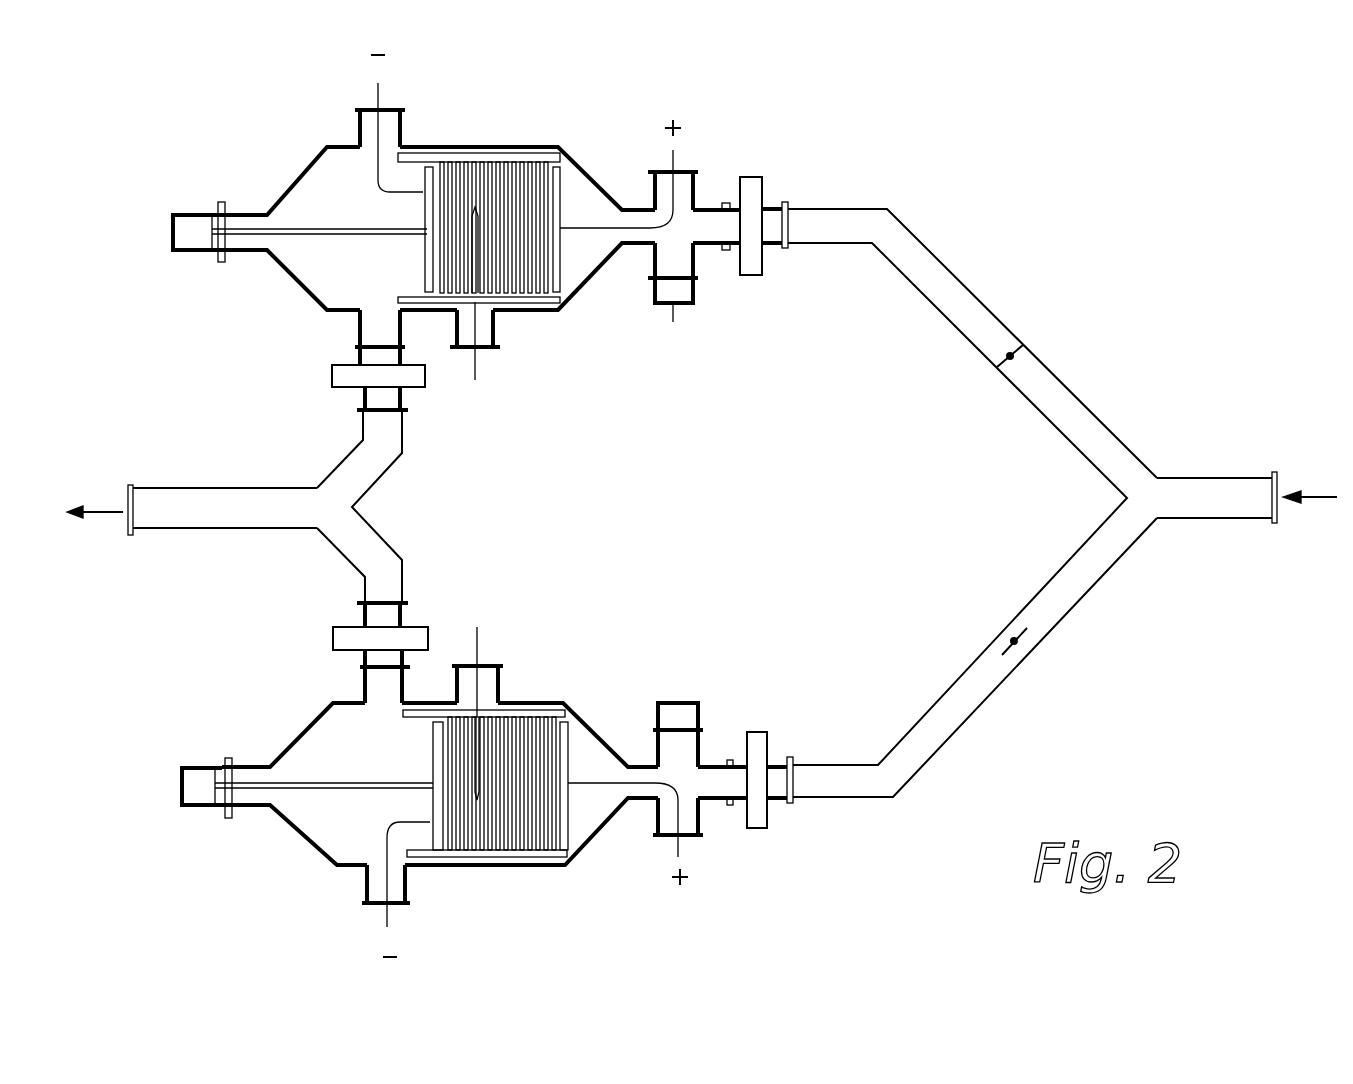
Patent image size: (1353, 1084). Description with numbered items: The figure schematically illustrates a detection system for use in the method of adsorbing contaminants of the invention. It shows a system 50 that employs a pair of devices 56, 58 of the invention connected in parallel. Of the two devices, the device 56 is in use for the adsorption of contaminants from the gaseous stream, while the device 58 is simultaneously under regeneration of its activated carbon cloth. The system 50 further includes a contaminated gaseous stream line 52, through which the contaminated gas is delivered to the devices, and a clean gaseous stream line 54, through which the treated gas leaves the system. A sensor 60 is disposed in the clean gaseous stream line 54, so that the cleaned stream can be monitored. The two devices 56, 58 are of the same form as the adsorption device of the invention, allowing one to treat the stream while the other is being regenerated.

The system 50 is at (827, 822).
The contaminated gaseous stream line 52 is at (1218, 518).
The clean gaseous stream line 54 is at (227, 530).
The device 56 is at (497, 865).
The device 58 is at (472, 147).
The sensor 60 is at (283, 507).